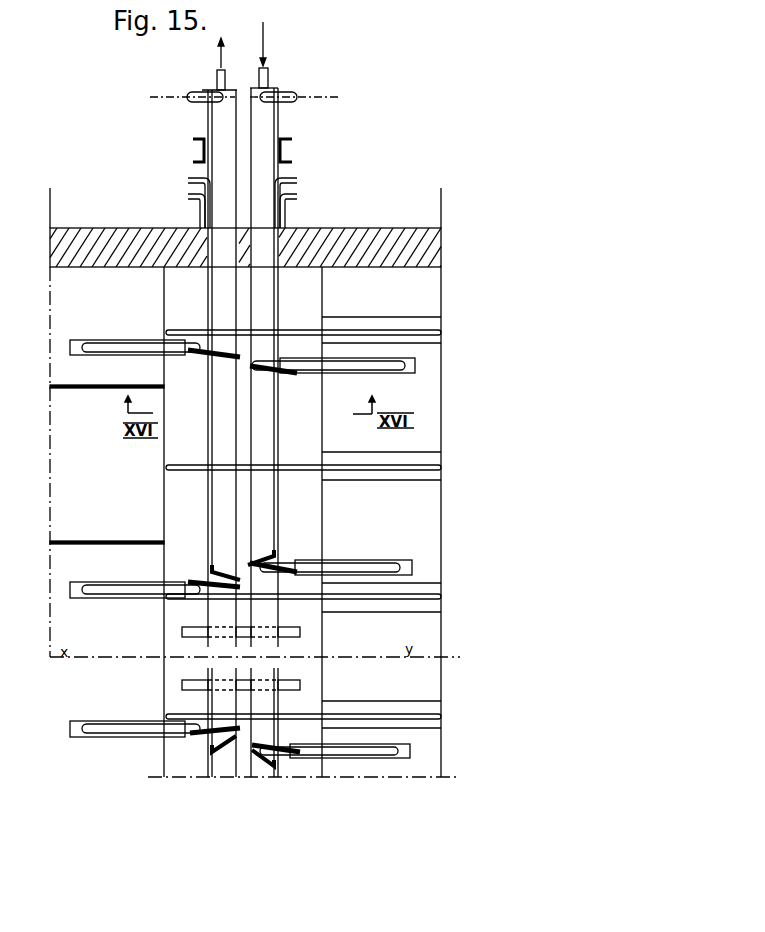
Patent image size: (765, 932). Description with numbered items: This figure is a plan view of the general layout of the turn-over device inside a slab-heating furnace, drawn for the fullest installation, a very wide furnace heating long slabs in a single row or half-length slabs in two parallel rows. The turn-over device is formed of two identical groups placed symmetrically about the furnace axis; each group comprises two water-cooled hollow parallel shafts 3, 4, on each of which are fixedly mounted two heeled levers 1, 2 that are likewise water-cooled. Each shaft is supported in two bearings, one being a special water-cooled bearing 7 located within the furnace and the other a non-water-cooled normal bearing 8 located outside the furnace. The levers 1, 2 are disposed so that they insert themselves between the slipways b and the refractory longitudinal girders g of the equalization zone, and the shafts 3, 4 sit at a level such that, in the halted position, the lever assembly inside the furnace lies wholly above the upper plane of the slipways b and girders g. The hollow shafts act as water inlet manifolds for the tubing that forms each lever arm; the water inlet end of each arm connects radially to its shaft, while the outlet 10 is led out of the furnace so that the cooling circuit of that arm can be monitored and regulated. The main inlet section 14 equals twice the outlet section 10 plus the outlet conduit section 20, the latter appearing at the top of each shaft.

The heeled lever 1 is at (313, 372).
The heeled lever 2 is at (120, 347).
The hollow shaft 3 is at (272, 528).
The hollow shaft 4 is at (224, 514).
The water-cooled bearing 7 is at (183, 632).
The normal bearing 8 is at (292, 147).
The outlet 10 is at (180, 180).
The main inlet section 14 is at (242, 93).
The outlet conduit section 20 is at (239, 45).
The slipways b is at (348, 331).
The refractory longitudinal girders g is at (107, 464).